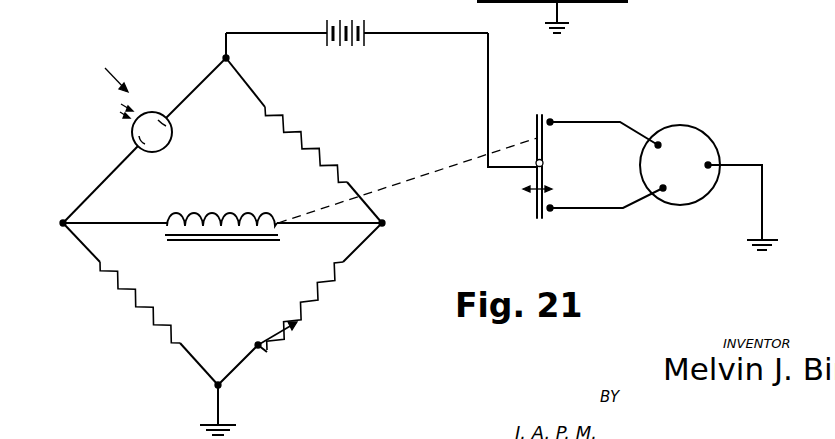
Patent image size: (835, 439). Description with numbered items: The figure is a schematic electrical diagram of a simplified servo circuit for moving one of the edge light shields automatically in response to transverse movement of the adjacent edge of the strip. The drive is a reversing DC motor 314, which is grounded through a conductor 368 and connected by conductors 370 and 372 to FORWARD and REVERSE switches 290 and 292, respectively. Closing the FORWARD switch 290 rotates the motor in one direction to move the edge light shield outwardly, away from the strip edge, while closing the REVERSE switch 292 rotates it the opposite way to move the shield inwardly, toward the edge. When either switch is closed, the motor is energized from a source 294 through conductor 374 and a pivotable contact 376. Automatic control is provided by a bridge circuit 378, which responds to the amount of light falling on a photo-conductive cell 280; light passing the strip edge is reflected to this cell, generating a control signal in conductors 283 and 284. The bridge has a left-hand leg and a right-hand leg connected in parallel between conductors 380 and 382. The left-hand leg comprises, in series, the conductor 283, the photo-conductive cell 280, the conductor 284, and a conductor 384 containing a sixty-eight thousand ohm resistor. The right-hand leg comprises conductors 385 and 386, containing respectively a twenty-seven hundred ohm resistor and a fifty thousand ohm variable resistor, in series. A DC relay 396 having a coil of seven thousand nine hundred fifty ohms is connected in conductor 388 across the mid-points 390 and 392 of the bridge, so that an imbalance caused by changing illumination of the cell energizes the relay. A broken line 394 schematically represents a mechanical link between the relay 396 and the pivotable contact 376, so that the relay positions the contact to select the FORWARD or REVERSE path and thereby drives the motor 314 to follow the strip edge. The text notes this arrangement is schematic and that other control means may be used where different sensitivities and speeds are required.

The photo-conductive cell 280 is at (158, 152).
The conductor 283 is at (185, 98).
The conductor 284 is at (95, 192).
The FORWARD switch 290 is at (548, 113).
The REVERSE switch 292 is at (545, 216).
The source 294 is at (367, 32).
The reversing DC motor 314 is at (700, 132).
The conductor 368 is at (763, 200).
The conductor 370 is at (611, 122).
The conductor 372 is at (623, 210).
The conductor 374 is at (488, 73).
The pivotable contact 376 is at (536, 200).
The bridge circuit 378 is at (112, 83).
The conductor 380 is at (227, 43).
The conductor 382 is at (220, 401).
The conductor containing 68,000 ohm resistor 384 is at (195, 367).
The conductor containing 2700 ohm resistor 385 is at (258, 84).
The conductor containing 50,000 ohm variable resistor 386 is at (361, 248).
The conductor 388 is at (323, 224).
The mid-point of bridge 390 is at (61, 225).
The mid-point of bridge 392 is at (385, 222).
The broken line 394 is at (427, 174).
The DC relay 396 is at (188, 241).